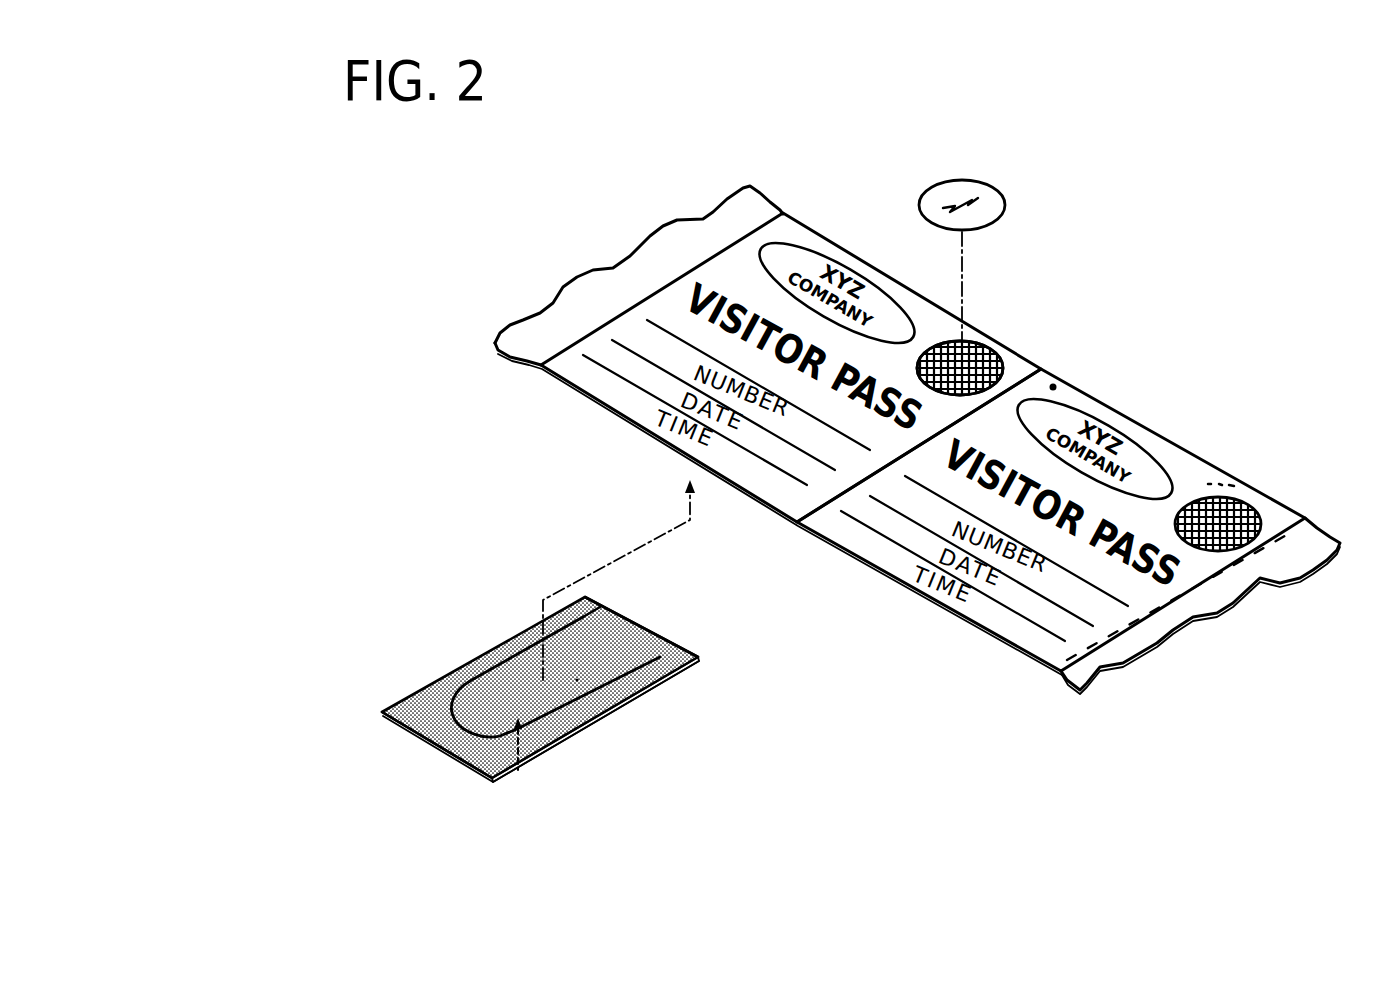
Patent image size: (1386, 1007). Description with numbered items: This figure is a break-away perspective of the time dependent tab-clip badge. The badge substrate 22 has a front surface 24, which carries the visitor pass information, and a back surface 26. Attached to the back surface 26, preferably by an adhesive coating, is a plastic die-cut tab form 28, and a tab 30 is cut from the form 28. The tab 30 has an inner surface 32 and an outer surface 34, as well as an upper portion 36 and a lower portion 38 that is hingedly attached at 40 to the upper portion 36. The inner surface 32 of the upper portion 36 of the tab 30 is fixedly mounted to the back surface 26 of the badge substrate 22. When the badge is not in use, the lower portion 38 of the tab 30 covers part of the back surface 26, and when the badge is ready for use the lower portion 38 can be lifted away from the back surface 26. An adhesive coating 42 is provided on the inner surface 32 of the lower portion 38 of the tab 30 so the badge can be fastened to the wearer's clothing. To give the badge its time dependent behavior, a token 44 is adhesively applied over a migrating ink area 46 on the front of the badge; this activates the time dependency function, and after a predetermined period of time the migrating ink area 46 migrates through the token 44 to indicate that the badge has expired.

The badge substrate 22 is at (965, 633).
The front surface 24 is at (1053, 387).
The back surface 26 is at (1240, 481).
The plastic die-cut tab form 28 is at (563, 743).
The tab 30 is at (577, 680).
The inner surface 32 is at (483, 703).
The outer surface 34 is at (518, 770).
The upper portion 36 is at (632, 650).
The lower portion 38 is at (497, 737).
The hinge 40 is at (598, 622).
The adhesive coating 42 is at (595, 707).
The token 44 is at (977, 200).
The migrating ink area 46 is at (962, 368).